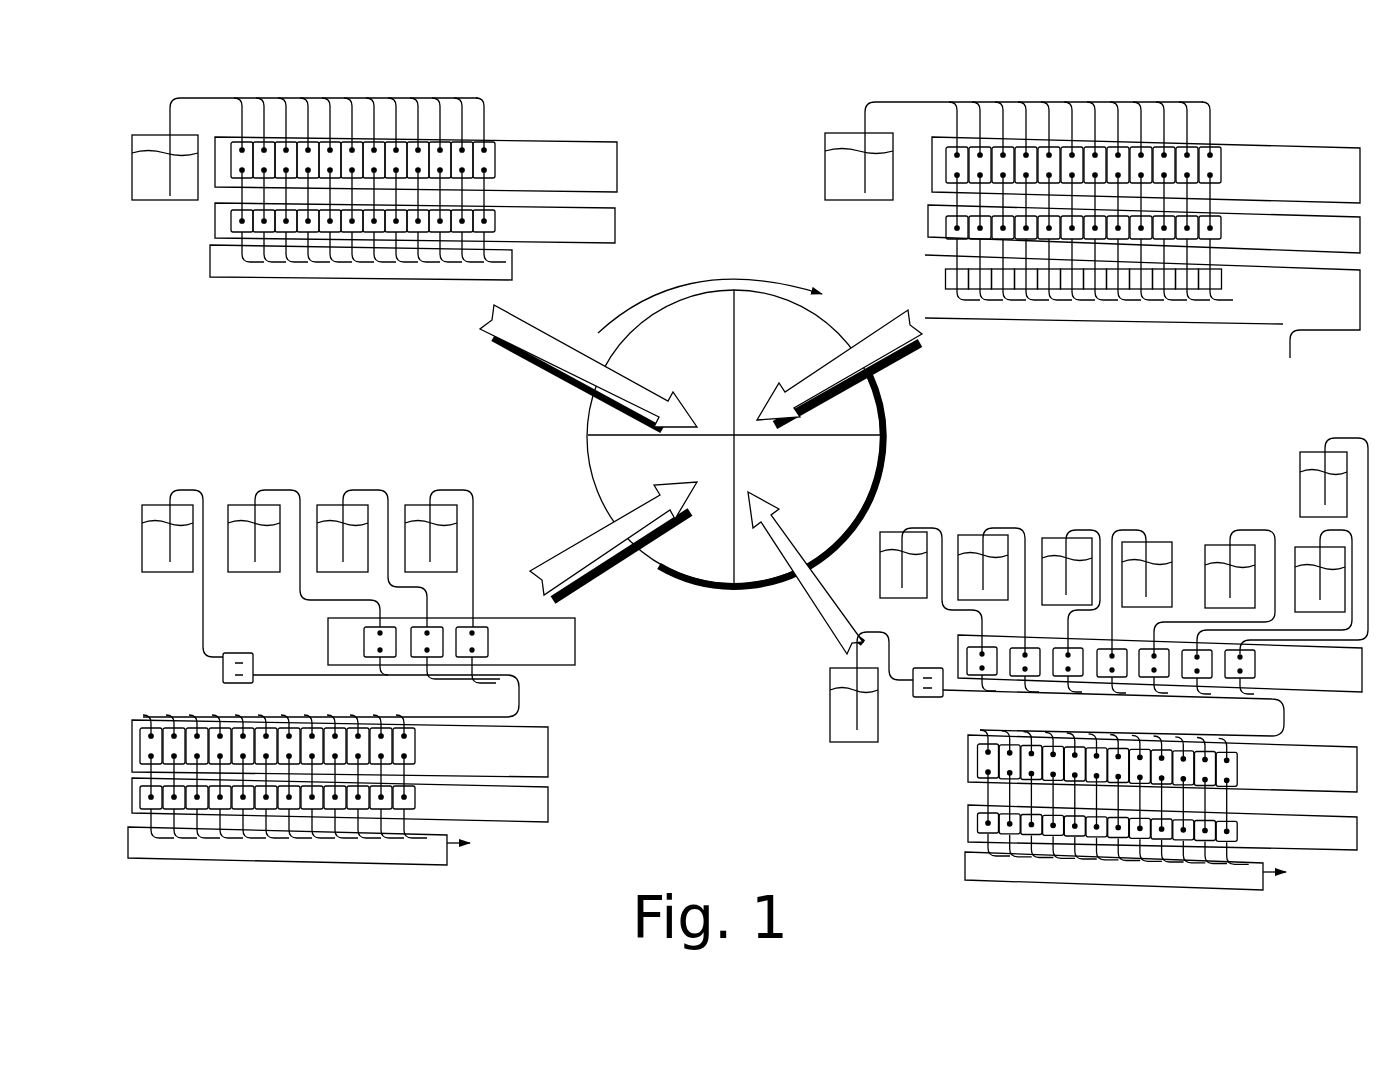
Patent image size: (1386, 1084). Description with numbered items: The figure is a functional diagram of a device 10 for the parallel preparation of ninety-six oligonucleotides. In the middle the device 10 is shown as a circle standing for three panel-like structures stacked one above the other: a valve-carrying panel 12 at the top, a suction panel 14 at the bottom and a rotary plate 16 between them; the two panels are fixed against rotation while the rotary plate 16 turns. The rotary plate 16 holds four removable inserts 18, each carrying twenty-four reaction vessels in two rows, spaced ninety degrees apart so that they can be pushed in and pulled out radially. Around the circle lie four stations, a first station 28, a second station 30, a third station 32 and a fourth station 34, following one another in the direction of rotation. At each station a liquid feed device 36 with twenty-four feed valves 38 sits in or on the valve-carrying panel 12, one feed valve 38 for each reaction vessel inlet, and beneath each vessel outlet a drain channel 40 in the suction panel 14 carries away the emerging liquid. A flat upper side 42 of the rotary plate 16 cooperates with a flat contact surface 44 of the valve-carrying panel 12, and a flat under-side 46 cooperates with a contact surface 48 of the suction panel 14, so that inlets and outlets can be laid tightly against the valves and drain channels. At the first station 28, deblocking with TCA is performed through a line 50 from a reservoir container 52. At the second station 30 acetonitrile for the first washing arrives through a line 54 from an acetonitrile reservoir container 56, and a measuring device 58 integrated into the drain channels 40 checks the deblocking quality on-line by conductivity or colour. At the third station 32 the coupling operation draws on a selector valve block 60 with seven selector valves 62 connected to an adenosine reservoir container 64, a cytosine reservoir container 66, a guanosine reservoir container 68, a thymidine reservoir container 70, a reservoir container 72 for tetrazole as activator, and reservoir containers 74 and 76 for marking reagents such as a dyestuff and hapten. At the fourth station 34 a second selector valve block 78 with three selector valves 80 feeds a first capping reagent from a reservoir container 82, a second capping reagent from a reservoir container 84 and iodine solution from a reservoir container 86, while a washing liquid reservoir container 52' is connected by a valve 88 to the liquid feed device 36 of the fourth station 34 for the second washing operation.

The device 10 is at (700, 628).
The valve-carrying panel 12 is at (607, 188).
The suction panel 14 is at (228, 267).
The rotary plate 16 is at (607, 244).
The removable insert 18 is at (214, 220).
The first station 28 is at (702, 364).
The second station 30 is at (794, 364).
The third station 32 is at (844, 496).
The fourth station 34 is at (649, 483).
The liquid feed device 36 is at (430, 142).
The feed valve 38 is at (490, 158).
The drain channel 40 is at (265, 256).
The upper side 42 is at (603, 205).
The contact surface 44 is at (937, 195).
The under-side 46 is at (562, 247).
The contact surface 48 is at (937, 250).
The line 50 is at (205, 99).
The reservoir container 52 is at (165, 131).
The washing liquid reservoir container 52' is at (175, 530).
The line 54 is at (860, 114).
The acetonitrile reservoir container 56 is at (838, 172).
The measuring device 58 is at (1232, 279).
The selector valve block 60 is at (1338, 677).
The selector valve 62 is at (1250, 666).
The adenosine reservoir container 64 is at (893, 533).
The cytosine reservoir container 66 is at (973, 535).
The guanosine reservoir container 68 is at (1057, 538).
The thymidine reservoir container 70 is at (1158, 545).
The reservoir container 72 is at (1220, 550).
The reservoir container 74 is at (1310, 553).
The reservoir container 76 is at (1315, 458).
The second selector valve block 78 is at (572, 656).
The selector valve 80 is at (482, 643).
The reservoir container 82 is at (239, 503).
The reservoir container 84 is at (328, 503).
The reservoir container 86 is at (415, 503).
The valve 88 is at (246, 660).